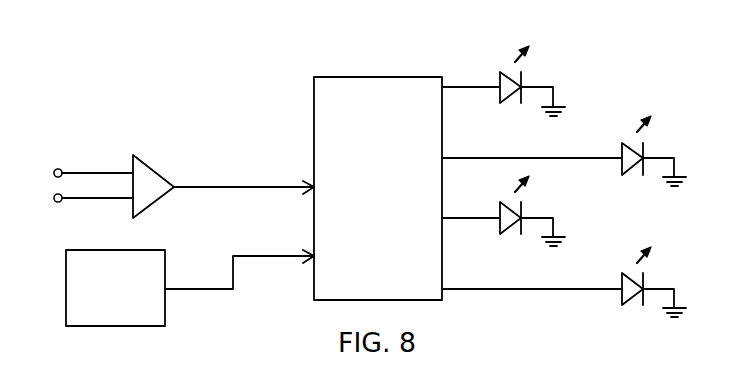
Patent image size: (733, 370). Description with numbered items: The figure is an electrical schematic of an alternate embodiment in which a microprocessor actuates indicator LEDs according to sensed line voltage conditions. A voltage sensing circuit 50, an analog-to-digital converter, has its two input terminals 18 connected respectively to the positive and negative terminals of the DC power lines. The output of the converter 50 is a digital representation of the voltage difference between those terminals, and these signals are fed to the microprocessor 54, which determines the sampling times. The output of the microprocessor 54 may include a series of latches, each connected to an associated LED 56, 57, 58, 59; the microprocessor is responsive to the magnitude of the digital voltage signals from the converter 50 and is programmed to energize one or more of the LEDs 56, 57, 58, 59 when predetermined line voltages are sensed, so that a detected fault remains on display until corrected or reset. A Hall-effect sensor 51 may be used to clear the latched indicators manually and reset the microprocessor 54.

The input terminals 18 is at (78, 185).
The voltage sensing circuit 50 is at (158, 147).
The Hall-effect sensor 51 is at (158, 249).
The microprocessor 54 is at (378, 77).
The LED 56 is at (540, 66).
The LED 57 is at (662, 142).
The LED 58 is at (542, 205).
The LED 59 is at (662, 272).